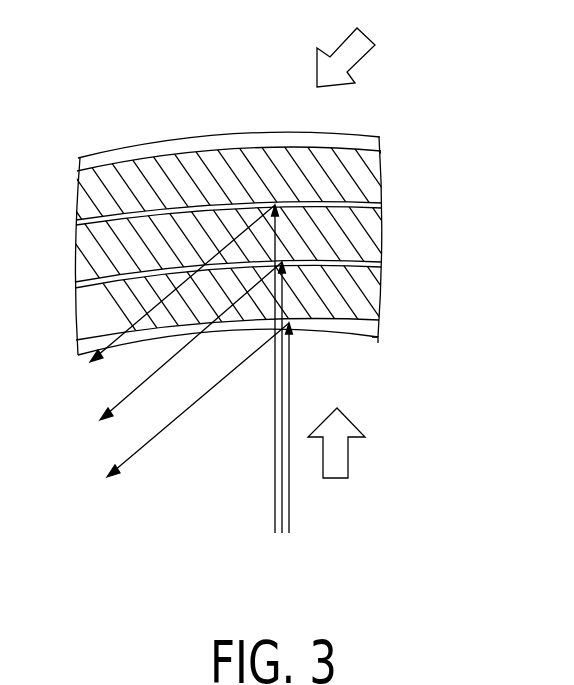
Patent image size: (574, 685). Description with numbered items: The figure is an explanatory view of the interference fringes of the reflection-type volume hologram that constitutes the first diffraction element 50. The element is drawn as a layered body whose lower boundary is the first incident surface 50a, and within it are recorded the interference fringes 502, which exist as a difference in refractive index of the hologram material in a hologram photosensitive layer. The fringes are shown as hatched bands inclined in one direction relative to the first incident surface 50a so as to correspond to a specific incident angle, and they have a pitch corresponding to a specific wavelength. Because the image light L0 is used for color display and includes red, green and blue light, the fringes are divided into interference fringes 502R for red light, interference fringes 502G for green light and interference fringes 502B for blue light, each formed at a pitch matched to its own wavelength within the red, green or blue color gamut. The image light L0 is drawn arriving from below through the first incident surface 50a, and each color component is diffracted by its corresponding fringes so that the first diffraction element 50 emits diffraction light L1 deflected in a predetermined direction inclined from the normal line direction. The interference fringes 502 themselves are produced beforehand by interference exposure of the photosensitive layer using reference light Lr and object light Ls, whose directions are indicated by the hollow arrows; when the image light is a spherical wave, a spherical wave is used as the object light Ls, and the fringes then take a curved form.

The first diffraction element 50 is at (270, 223).
The first incident surface 50a is at (368, 338).
The interference fringes 502 is at (270, 250).
The interference fringes for red light 502R is at (375, 181).
The interference fringes for green light 502G is at (372, 232).
The interference fringes for blue light 502B is at (477, 160).
The image light L0 is at (277, 400).
The diffraction light L1 is at (152, 353).
The reference light Lr is at (358, 48).
The object light Ls is at (347, 448).